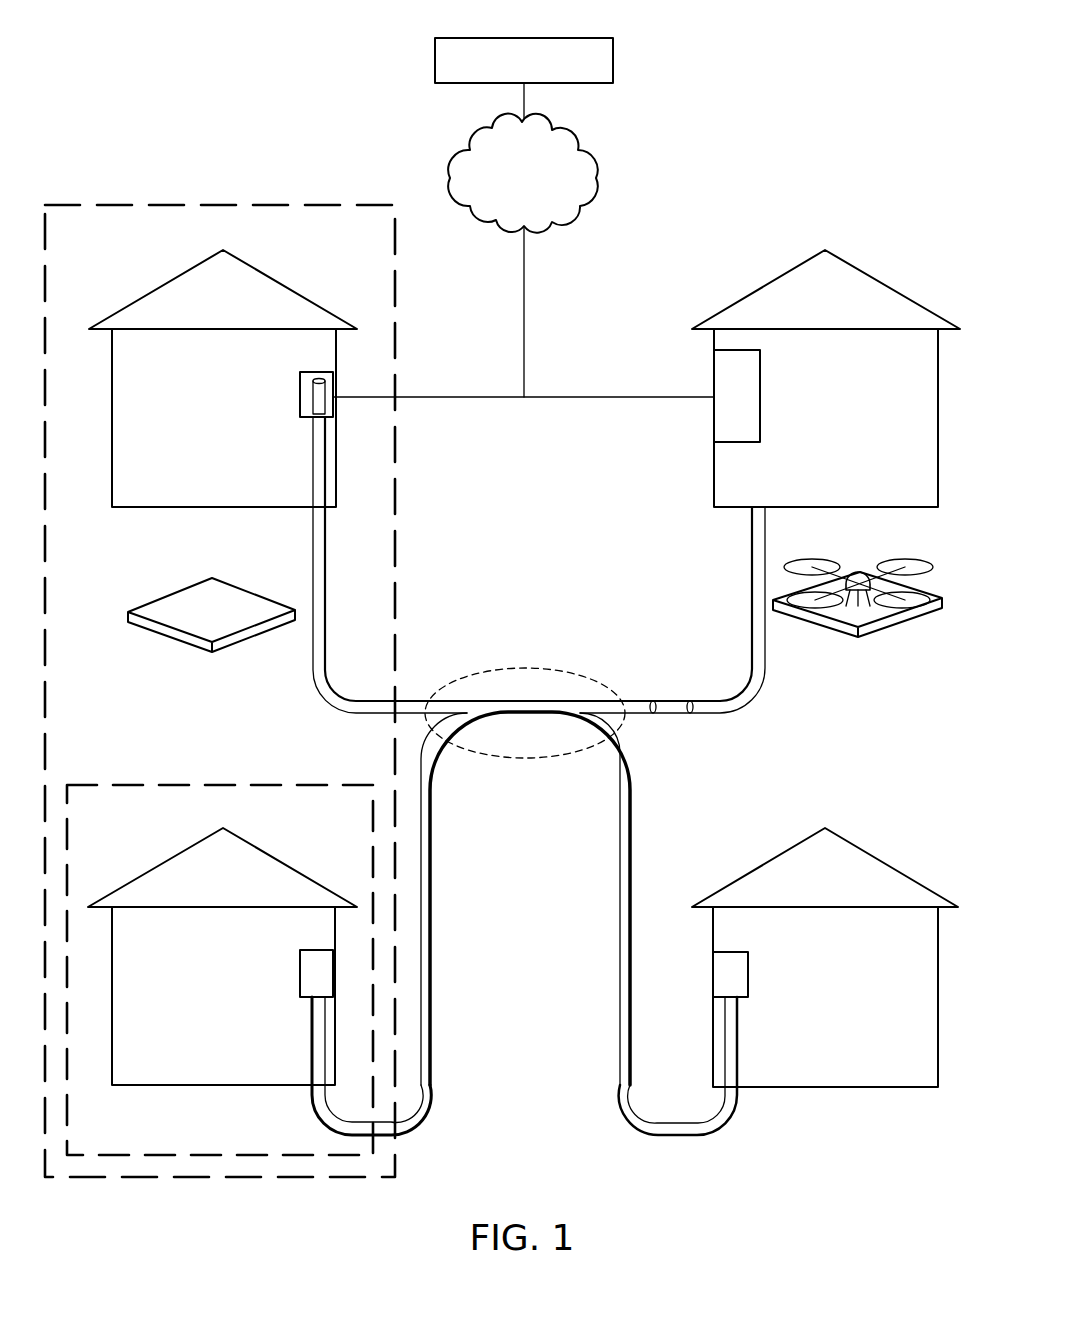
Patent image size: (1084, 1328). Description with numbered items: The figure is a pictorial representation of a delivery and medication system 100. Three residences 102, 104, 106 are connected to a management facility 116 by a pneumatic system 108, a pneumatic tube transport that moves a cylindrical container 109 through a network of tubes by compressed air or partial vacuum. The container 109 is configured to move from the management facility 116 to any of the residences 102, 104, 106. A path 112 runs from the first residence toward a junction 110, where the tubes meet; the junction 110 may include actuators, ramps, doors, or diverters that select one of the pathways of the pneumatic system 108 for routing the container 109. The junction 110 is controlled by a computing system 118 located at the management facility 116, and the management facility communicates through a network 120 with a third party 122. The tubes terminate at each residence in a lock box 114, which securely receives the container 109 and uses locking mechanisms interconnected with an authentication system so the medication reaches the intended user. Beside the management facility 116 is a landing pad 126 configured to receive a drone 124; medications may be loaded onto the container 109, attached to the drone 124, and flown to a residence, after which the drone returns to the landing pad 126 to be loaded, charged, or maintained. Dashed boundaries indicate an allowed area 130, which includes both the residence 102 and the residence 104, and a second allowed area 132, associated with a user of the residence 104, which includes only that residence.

The delivery and medication system 100 is at (813, 58).
The residence 102 is at (203, 450).
The residence 104 is at (202, 1030).
The residence 106 is at (803, 1029).
The pneumatic system 108 is at (618, 944).
The container 109 is at (677, 714).
The junction 110 is at (502, 668).
The path 112 is at (368, 715).
The lock box 114 is at (319, 372).
The management facility 116 is at (828, 464).
The computing system 118 is at (722, 370).
The network 120 is at (600, 176).
The third party 122 is at (435, 60).
The drone 124 is at (858, 572).
The landing pad 126 is at (902, 625).
The allowed area 130 is at (168, 204).
The second allowed area 132 is at (178, 784).